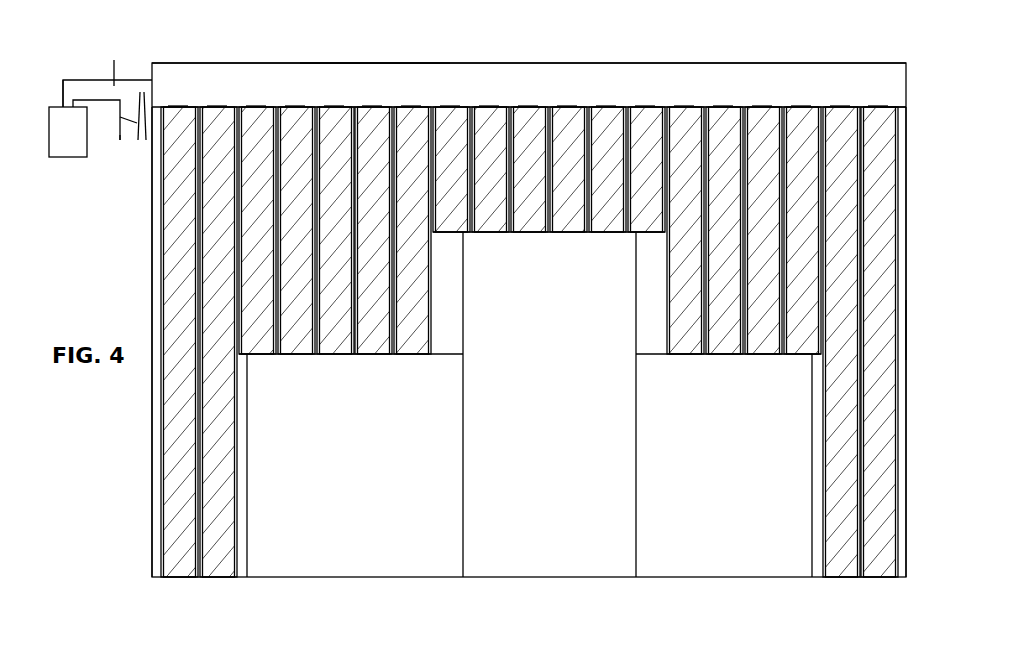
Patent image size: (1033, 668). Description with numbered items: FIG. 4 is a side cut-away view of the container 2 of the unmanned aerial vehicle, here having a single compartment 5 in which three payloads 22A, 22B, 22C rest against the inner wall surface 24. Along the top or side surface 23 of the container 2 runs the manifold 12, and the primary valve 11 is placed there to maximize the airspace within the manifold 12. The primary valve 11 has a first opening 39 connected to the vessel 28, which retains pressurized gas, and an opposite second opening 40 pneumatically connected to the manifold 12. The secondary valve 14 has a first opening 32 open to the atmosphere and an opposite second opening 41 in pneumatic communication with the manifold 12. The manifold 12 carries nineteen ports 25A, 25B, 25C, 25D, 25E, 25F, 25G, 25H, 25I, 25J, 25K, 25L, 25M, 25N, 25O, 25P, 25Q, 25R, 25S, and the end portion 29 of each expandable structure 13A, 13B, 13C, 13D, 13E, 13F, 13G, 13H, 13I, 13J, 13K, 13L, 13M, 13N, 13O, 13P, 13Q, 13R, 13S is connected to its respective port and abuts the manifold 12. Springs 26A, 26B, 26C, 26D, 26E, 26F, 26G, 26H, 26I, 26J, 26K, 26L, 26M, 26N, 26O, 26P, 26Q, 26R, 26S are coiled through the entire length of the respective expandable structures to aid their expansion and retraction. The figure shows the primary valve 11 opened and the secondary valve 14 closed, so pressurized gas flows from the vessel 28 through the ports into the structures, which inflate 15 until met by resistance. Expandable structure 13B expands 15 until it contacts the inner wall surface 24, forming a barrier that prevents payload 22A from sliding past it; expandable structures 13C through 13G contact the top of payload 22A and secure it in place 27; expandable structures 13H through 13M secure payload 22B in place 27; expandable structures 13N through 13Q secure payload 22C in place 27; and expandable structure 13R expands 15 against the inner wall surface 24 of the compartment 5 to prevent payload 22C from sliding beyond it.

The container 2 is at (906, 335).
The compartment 5 is at (906, 262).
The primary valve 11 is at (102, 84).
The manifold 12 is at (210, 70).
The secondary valve 14 is at (131, 124).
The expansion 15 is at (165, 240).
The payload 22A is at (346, 562).
The payload 22B is at (554, 562).
The payload 22C is at (726, 562).
The top or side surface 23 is at (378, 62).
The inner wall surface 24 is at (248, 574).
The securing in place 27 is at (300, 357).
The vessel 28 is at (78, 158).
The end portion 29 is at (894, 107).
The first opening 32 is at (131, 137).
The first opening 39 is at (66, 90).
The second opening 40 is at (112, 65).
The second opening 41 is at (143, 126).
The expandable structure 13A is at (165, 166).
The expandable structure 13B is at (204, 166).
The expandable structure 13C is at (243, 166).
The expandable structure 13D is at (282, 166).
The expandable structure 13E is at (321, 166).
The expandable structure 13F is at (359, 166).
The expandable structure 13G is at (398, 166).
The expandable structure 13H is at (437, 166).
The expandable structure 13I is at (476, 166).
The expandable structure 13J is at (515, 166).
The expandable structure 13K is at (554, 166).
The expandable structure 13L is at (593, 166).
The expandable structure 13M is at (632, 166).
The expandable structure 13N is at (671, 166).
The expandable structure 13O is at (710, 166).
The expandable structure 13P is at (749, 166).
The expandable structure 13Q is at (788, 166).
The expandable structure 13R is at (827, 166).
The expandable structure 13S is at (865, 166).
The port 25A is at (180, 104).
The port 25B is at (219, 104).
The port 25C is at (258, 104).
The port 25D is at (297, 104).
The port 25E is at (336, 104).
The port 25F is at (374, 104).
The port 25G is at (413, 104).
The port 25H is at (452, 104).
The port 25I is at (491, 104).
The port 25J is at (530, 104).
The port 25K is at (569, 104).
The port 25L is at (608, 104).
The port 25M is at (647, 104).
The port 25N is at (686, 104).
The port 25O is at (725, 104).
The port 25P is at (764, 104).
The port 25Q is at (803, 104).
The port 25R is at (842, 104).
The port 25S is at (880, 104).
The spring 26A is at (185, 186).
The spring 26B is at (224, 186).
The spring 26C is at (263, 186).
The spring 26D is at (302, 186).
The spring 26E is at (341, 186).
The spring 26F is at (379, 186).
The spring 26G is at (418, 186).
The spring 26H is at (457, 186).
The spring 26I is at (496, 186).
The spring 26J is at (535, 186).
The spring 26K is at (574, 186).
The spring 26L is at (613, 186).
The spring 26M is at (652, 186).
The spring 26N is at (691, 186).
The spring 26O is at (730, 186).
The spring 26P is at (769, 186).
The spring 26Q is at (808, 186).
The spring 26R is at (847, 186).
The spring 26S is at (885, 186).